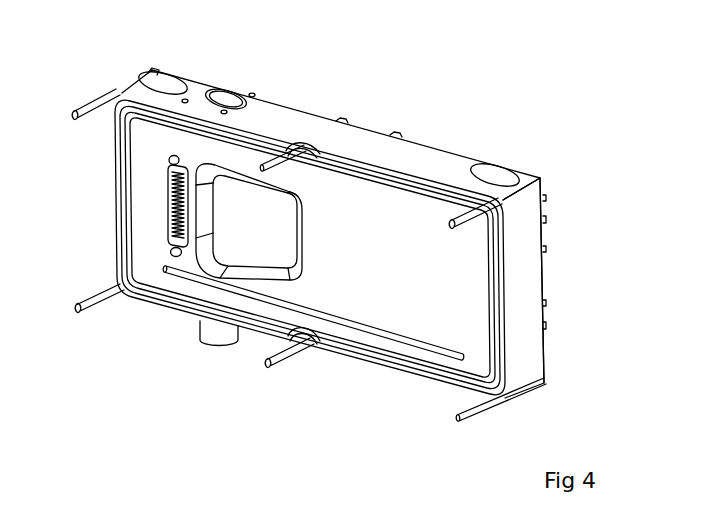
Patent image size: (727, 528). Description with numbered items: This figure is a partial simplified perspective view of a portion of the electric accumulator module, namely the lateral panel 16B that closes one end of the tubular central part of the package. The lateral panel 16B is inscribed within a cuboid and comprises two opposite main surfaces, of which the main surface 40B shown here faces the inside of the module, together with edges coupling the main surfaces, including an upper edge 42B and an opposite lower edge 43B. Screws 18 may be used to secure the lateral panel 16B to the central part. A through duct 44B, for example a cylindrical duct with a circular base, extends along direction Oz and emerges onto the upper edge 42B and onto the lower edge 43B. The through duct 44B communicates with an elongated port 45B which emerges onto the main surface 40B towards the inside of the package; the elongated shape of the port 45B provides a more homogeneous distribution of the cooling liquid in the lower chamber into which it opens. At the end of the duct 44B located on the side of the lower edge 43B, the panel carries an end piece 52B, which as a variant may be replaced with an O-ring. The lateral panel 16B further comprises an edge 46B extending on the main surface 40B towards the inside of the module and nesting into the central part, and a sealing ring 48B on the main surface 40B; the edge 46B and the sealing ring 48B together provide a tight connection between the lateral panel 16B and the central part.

The lateral panel 16B is at (443, 147).
The screw 18 is at (302, 151).
The main surface 40B is at (467, 290).
The upper edge 42B is at (398, 148).
The lower edge 43B is at (370, 363).
The through duct 44B is at (217, 97).
The elongated port 45B is at (278, 318).
The edge 46B is at (242, 130).
The sealing ring 48B is at (350, 158).
The end piece 52B is at (198, 328).